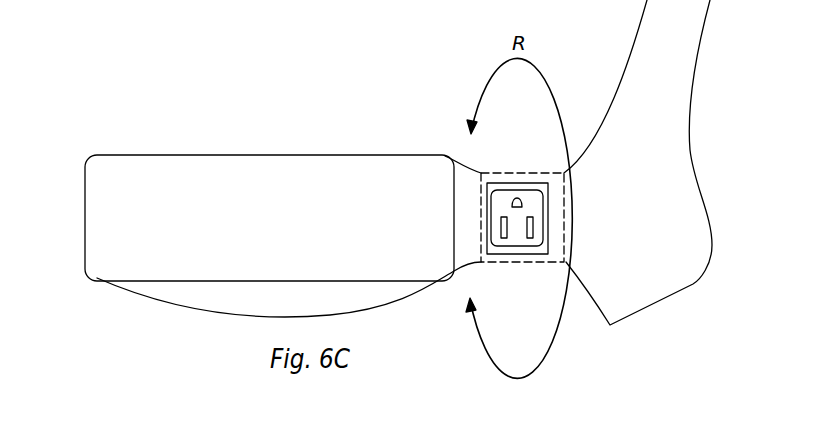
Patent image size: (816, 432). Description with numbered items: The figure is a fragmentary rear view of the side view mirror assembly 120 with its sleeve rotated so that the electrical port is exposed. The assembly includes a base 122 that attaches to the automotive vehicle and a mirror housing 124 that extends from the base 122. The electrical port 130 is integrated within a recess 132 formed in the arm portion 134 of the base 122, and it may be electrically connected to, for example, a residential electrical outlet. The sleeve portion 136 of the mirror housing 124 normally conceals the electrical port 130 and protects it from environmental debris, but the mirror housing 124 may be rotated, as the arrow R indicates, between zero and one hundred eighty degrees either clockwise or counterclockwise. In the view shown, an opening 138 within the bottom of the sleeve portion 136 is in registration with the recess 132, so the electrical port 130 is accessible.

The side view mirror assembly 120 is at (362, 62).
The base 122 is at (634, 30).
The mirror housing 124 is at (85, 230).
The electrical port 130 is at (517, 207).
The recess 132 is at (517, 196).
The arm portion 134 is at (548, 262).
The sleeve portion 136 is at (467, 180).
The opening 138 is at (486, 222).